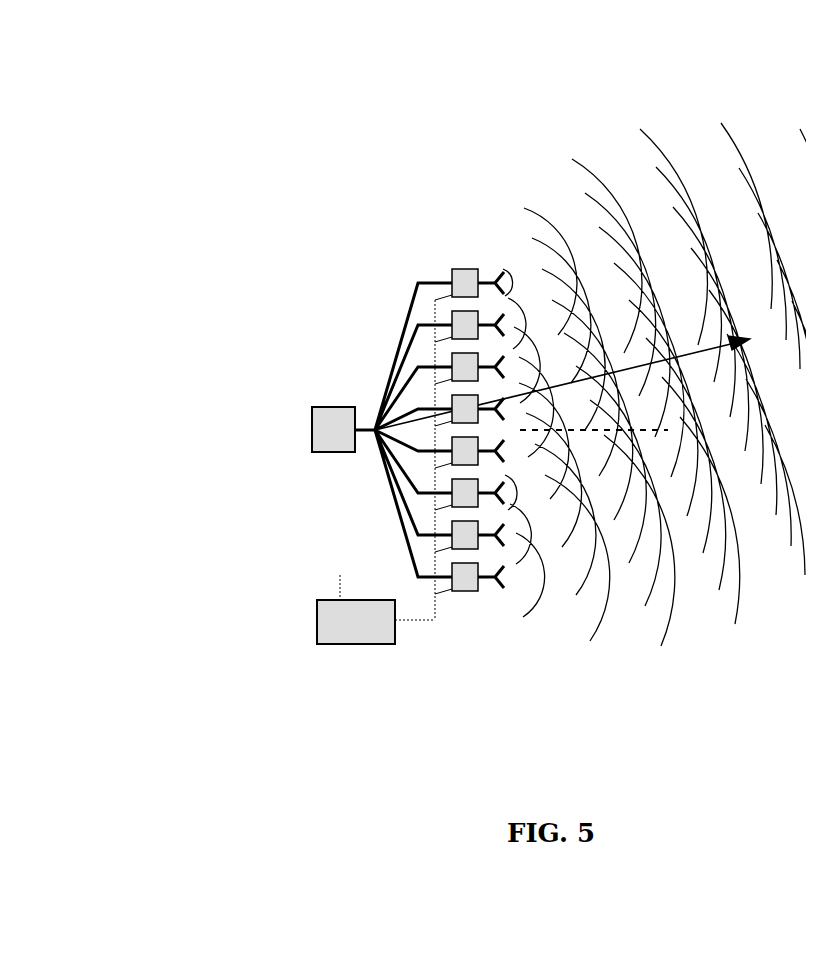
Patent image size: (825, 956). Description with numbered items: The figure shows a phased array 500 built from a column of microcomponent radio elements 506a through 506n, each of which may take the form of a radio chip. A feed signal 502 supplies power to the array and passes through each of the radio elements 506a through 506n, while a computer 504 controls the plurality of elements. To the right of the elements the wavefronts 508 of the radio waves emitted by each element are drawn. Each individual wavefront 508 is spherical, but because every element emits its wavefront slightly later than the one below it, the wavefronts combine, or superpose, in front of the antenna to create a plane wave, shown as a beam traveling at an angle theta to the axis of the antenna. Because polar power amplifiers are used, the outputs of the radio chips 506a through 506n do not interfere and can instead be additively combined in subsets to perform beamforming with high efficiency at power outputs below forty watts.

The phased array 500 is at (157, 86).
The feed signal 502 is at (313, 412).
The computer 504 is at (318, 606).
The microcomponent radio element 506a is at (460, 280).
The microcomponent radio element 506n is at (462, 582).
The wavefront of radio waves emitted by each element 508 is at (498, 604).